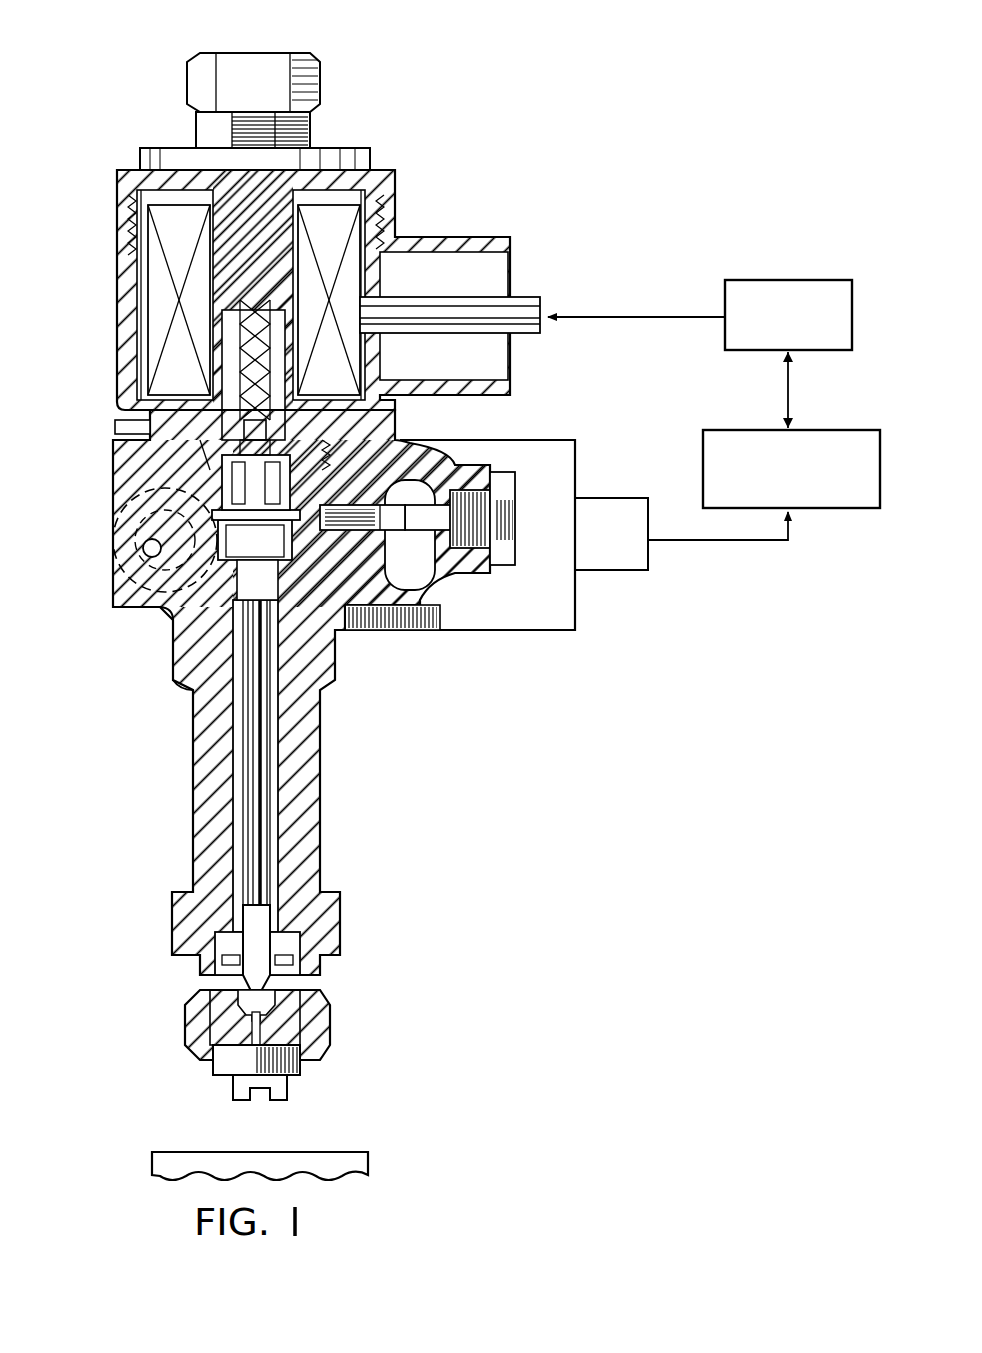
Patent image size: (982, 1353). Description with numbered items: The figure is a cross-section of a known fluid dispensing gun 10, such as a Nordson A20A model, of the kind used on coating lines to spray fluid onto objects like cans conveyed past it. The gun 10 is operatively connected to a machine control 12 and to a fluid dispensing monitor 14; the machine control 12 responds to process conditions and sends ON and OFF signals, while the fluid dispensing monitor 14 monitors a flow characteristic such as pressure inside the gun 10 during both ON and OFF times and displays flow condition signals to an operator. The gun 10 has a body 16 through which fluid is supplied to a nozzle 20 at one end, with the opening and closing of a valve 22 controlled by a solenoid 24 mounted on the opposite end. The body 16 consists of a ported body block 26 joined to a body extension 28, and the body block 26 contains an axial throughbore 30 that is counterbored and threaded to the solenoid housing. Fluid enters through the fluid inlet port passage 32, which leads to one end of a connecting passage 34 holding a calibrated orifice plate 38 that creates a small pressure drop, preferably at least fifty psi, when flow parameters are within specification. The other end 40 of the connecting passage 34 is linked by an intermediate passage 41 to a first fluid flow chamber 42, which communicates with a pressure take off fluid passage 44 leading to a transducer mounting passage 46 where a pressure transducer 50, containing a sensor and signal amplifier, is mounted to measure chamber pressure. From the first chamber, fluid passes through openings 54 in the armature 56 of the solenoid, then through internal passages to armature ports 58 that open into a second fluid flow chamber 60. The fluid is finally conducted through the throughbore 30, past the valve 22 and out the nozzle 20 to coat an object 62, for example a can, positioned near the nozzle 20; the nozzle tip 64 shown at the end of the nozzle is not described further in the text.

The fluid dispensing gun 10 is at (420, 62).
The machine control 12 is at (770, 280).
The fluid dispensing monitor 14 is at (822, 430).
The body 16 is at (192, 782).
The nozzle 20 is at (215, 1070).
The valve 22 is at (270, 978).
The solenoid 24 is at (365, 187).
The body block 26 is at (135, 612).
The body extension 28 is at (312, 785).
The throughbore 30 is at (270, 832).
The fluid inlet port passage 32 is at (400, 632).
The connecting passage 34 is at (364, 632).
The calibrated orifice plate 38 is at (398, 527).
The other end of the connecting passage 40 is at (440, 455).
The intermediate passage 41 is at (360, 455).
The first fluid flow chamber 42 is at (222, 485).
The pressure take off fluid passage 44 is at (130, 482).
The transducer mounting passage 46 is at (143, 552).
The pressure transducer 50 is at (575, 604).
The openings 54 is at (235, 470).
The armature 56 is at (225, 452).
The armature ports 58 is at (166, 615).
The second fluid flow chamber 60 is at (178, 655).
The object 62 is at (300, 1152).
The nozzle tip 64 is at (232, 1075).